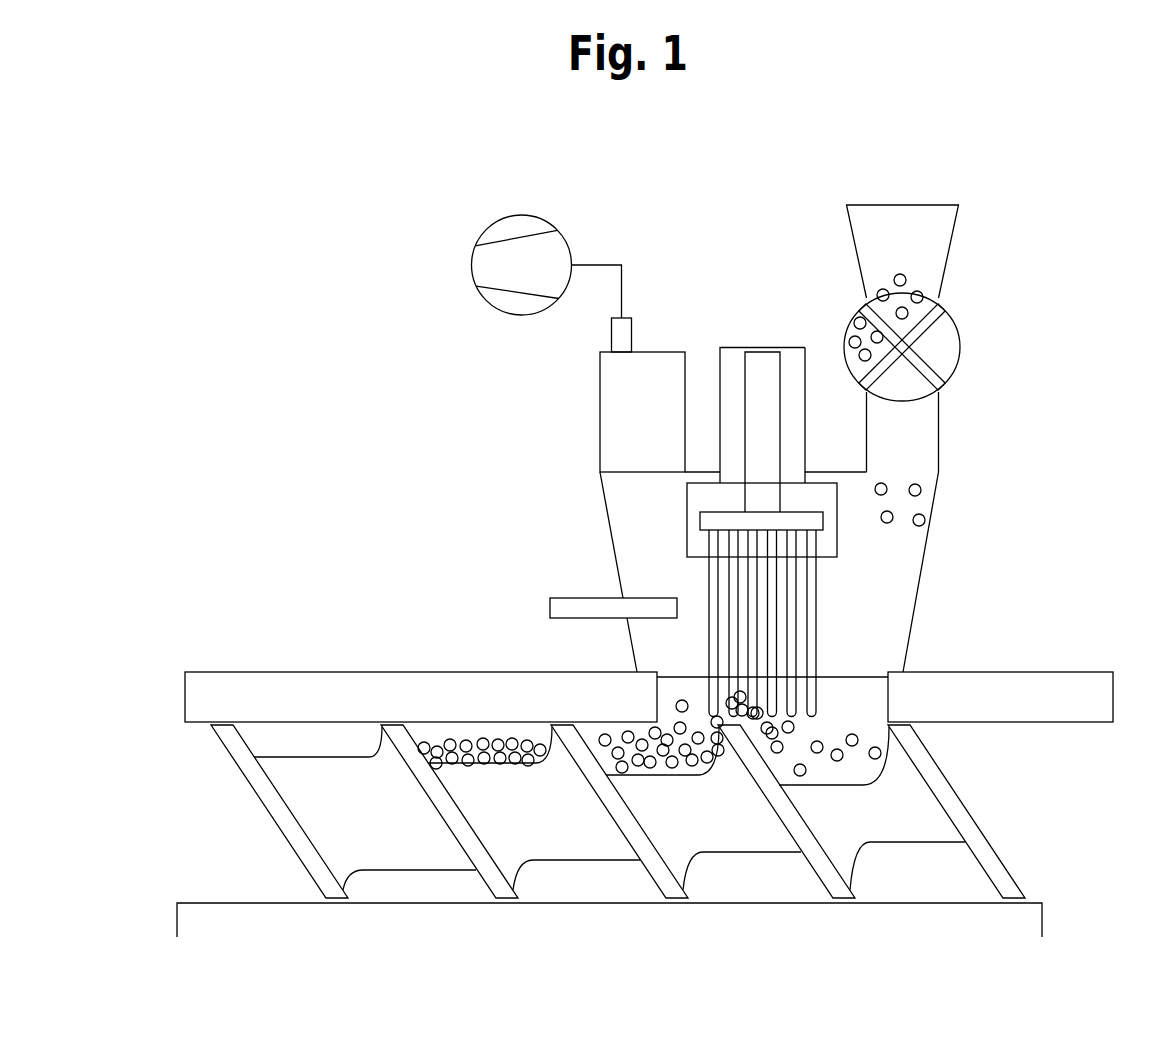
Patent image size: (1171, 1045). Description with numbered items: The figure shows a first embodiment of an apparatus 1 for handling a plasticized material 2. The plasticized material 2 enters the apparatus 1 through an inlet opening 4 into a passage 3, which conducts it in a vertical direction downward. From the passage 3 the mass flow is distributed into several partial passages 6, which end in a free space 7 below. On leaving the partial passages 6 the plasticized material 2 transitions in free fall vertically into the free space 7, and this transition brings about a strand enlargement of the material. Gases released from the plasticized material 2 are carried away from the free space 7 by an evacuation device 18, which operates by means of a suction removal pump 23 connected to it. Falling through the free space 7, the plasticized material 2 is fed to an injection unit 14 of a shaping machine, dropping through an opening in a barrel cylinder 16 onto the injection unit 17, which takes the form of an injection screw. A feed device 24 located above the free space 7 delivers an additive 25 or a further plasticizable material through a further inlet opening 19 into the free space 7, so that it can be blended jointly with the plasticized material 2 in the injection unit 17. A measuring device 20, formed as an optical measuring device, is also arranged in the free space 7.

The apparatus 1 is at (310, 375).
The plasticized material 2 is at (765, 373).
The passage 3 is at (733, 358).
The inlet opening 4 is at (792, 347).
The partial passages 6 is at (714, 578).
The free space 7 is at (885, 560).
The injection unit 14 is at (267, 557).
The barrel cylinder 16 is at (457, 690).
The injection unit 17 is at (317, 803).
The evacuation device 18 is at (635, 405).
The further inlet opening 19 is at (938, 470).
The measuring device 20 is at (563, 582).
The suction removal pump 23 is at (573, 213).
The feed device 24 is at (942, 338).
The additive 25 is at (932, 520).